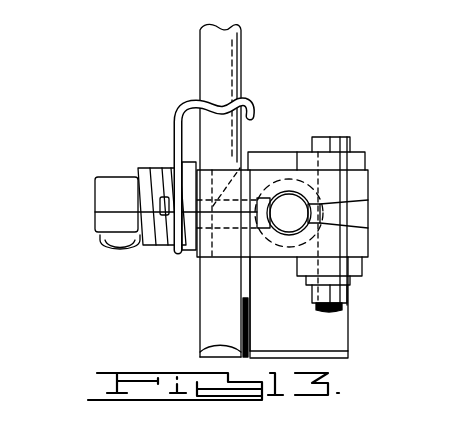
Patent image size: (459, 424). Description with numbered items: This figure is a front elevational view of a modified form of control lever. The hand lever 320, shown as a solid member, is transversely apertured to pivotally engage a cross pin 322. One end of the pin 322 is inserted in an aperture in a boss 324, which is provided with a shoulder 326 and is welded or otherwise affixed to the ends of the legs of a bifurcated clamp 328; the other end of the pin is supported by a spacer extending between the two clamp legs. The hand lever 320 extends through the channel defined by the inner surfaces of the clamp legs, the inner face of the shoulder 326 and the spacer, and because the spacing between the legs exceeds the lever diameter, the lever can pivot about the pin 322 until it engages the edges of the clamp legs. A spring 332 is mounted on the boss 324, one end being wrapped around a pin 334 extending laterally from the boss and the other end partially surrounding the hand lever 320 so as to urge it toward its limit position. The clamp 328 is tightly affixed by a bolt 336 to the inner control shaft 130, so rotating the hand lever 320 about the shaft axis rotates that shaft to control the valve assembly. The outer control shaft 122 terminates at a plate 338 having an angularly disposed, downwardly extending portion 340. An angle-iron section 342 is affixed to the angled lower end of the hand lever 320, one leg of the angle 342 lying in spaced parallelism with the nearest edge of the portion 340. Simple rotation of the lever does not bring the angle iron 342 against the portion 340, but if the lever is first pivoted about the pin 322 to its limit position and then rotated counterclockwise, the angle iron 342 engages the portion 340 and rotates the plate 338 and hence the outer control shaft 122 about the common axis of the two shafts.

The outer control shaft 122 is at (362, 188).
The inner control shaft 130 is at (300, 216).
The hand lever 320 is at (218, 55).
The cross pin 322 is at (287, 158).
The boss 324 is at (110, 185).
The shoulder 326 is at (188, 252).
The bifurcated clamp 328 is at (285, 258).
The spring 332 is at (161, 246).
The pin 334 is at (120, 252).
The bolt 336 is at (340, 137).
The plate 338 is at (293, 152).
The downwardly extending portion 340 is at (338, 322).
The angle-iron section 342 is at (243, 324).